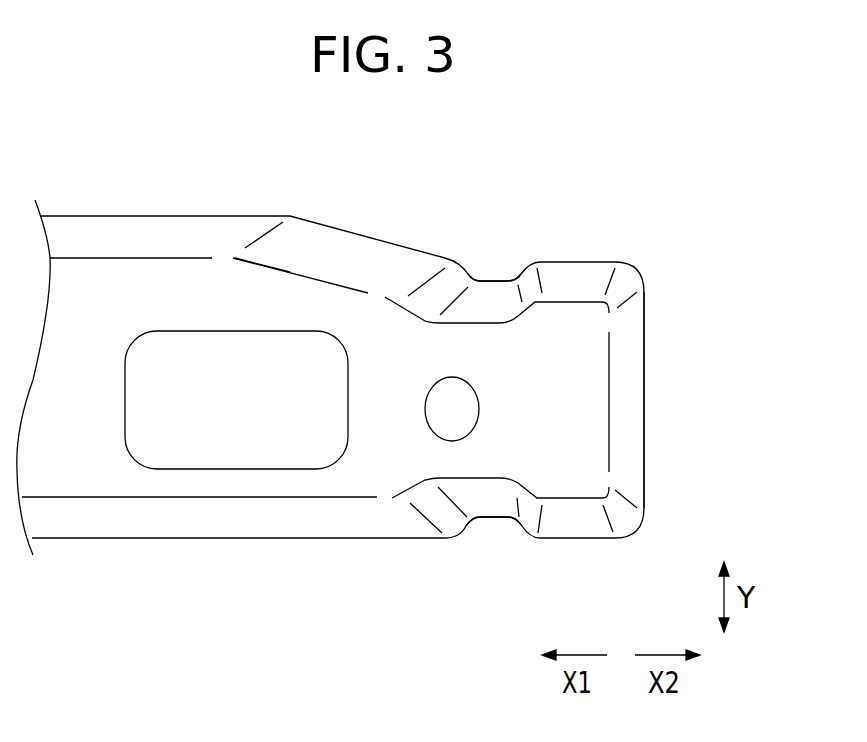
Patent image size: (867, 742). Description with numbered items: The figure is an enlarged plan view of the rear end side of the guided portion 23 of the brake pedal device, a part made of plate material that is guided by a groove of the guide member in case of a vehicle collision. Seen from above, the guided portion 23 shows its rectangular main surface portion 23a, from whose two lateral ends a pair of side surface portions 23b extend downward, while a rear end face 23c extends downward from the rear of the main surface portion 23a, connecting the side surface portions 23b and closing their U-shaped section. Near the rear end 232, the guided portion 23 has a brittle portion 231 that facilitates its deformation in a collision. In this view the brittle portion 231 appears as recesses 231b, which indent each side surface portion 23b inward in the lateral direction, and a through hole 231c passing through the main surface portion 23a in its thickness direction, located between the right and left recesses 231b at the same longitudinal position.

The guided portion 23 is at (100, 290).
The main surface portion 23a is at (160, 290).
The side surface portions 23b is at (232, 230).
The rear end face 23c is at (625, 423).
The brittle portion 231 is at (488, 242).
The recesses 231b is at (493, 298).
The through hole 231c is at (450, 440).
The rear end 232 is at (572, 356).